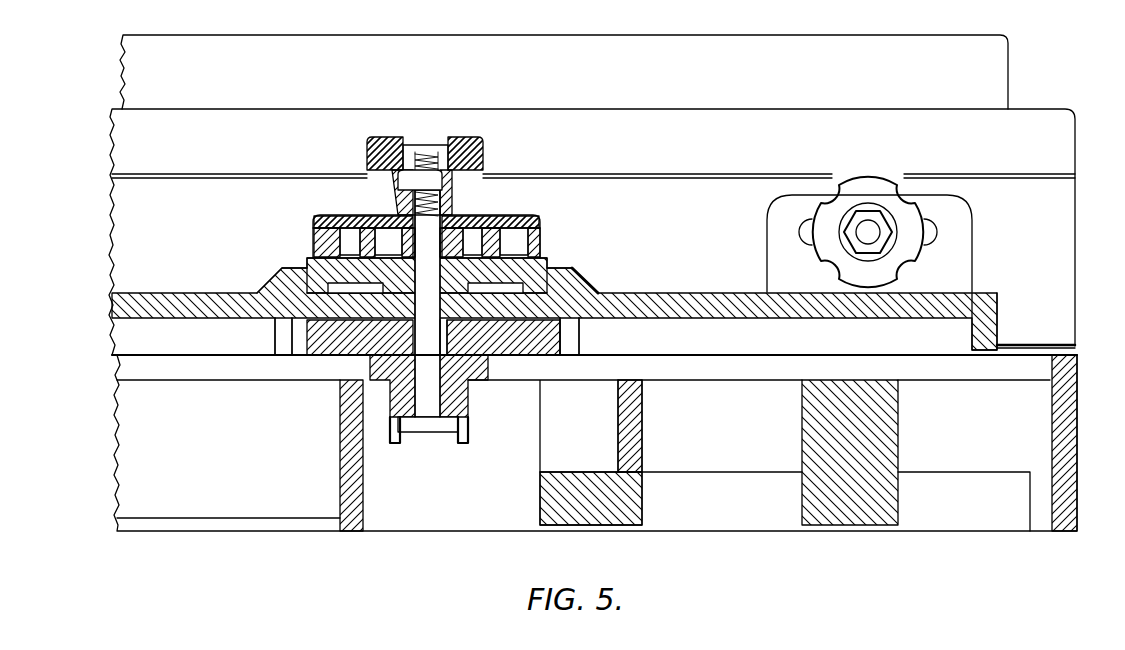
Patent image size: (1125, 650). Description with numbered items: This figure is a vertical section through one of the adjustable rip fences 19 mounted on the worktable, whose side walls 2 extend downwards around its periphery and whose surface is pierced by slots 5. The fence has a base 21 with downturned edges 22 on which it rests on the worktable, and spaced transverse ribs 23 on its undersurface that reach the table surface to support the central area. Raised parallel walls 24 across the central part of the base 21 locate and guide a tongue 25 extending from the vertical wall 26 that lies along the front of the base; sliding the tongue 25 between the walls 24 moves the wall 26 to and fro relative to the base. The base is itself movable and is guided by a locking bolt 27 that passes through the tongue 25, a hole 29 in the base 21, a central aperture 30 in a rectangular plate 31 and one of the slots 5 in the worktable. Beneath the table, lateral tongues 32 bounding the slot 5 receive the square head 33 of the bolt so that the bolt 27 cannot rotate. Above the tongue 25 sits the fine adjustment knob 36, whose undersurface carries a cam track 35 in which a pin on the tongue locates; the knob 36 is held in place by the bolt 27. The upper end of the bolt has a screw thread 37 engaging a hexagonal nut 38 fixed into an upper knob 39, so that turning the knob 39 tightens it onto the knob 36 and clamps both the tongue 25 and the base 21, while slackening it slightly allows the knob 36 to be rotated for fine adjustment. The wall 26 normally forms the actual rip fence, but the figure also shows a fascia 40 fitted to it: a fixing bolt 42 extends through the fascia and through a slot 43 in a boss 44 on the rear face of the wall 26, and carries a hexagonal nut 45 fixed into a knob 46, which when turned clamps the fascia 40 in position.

The side walls 2 is at (1063, 484).
The slots 5 is at (410, 398).
The rip fence 19 is at (705, 210).
The base 21 is at (683, 292).
The downturned edges 22 is at (993, 334).
The transverse ribs 23 is at (283, 338).
The raised parallel walls 24 is at (278, 276).
The tongue 25 is at (540, 270).
The vertical wall 26 is at (261, 142).
The locking bolt 27 is at (432, 233).
The hole 29 is at (373, 326).
The central aperture 30 is at (443, 340).
The rectangular plate 31 is at (520, 340).
The lateral tongues 32 is at (394, 443).
The square head 33 is at (432, 425).
The cam track 35 is at (352, 228).
The fine adjustment knob 36 is at (530, 216).
The screw thread 37 is at (455, 137).
The hexagonal nut 38 is at (425, 145).
The knob 39 is at (387, 137).
The fascia 40 is at (803, 80).
The fixing bolt 42 is at (872, 237).
The slot 43 is at (940, 231).
The boss 44 is at (957, 279).
The hexagonal nut 45 is at (880, 219).
The knob 46 is at (866, 187).